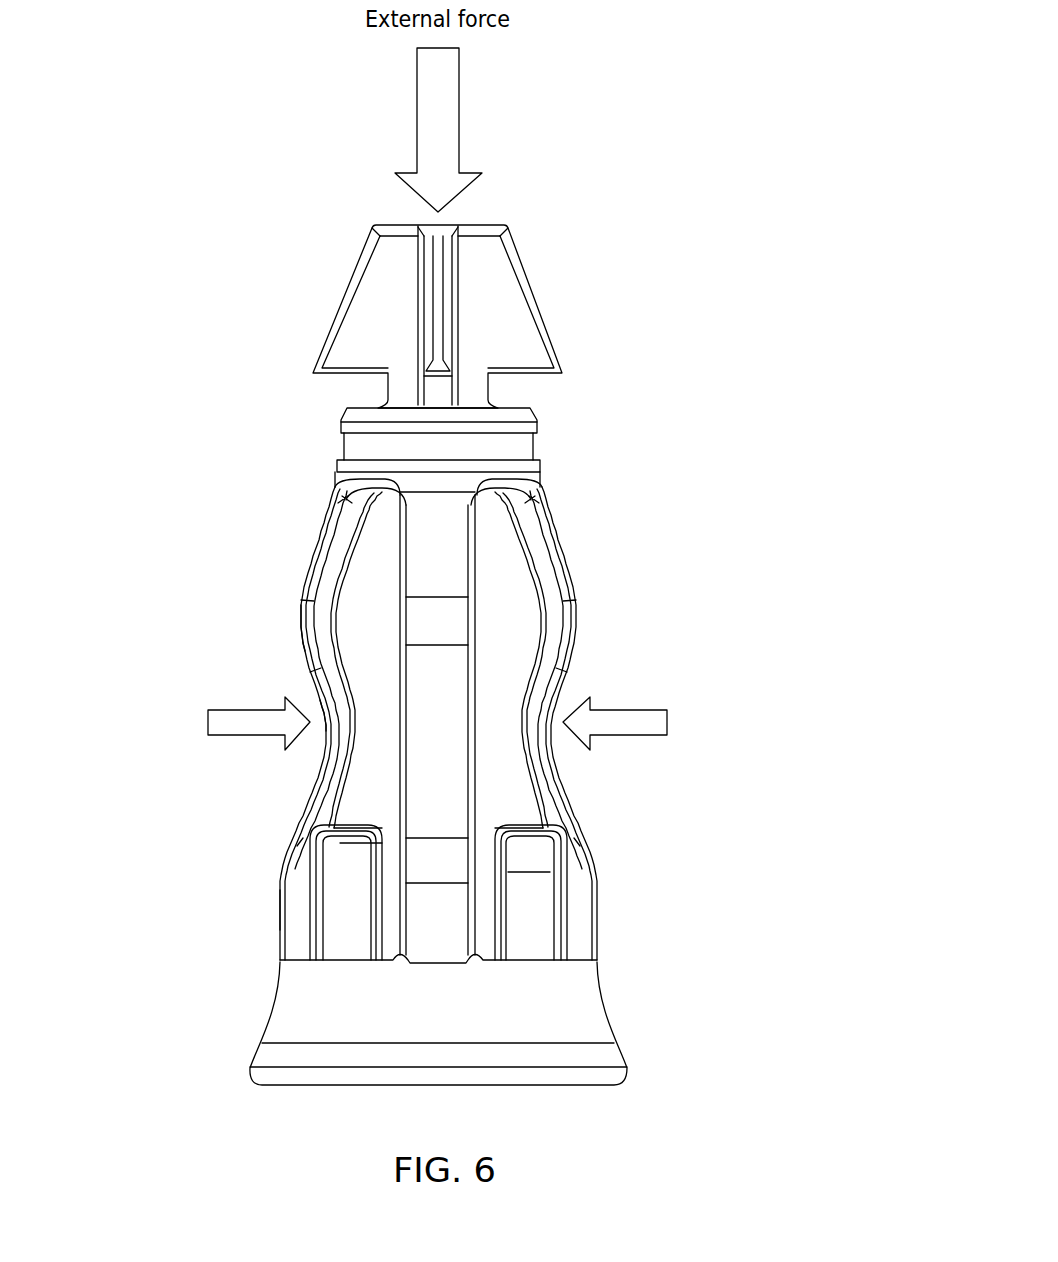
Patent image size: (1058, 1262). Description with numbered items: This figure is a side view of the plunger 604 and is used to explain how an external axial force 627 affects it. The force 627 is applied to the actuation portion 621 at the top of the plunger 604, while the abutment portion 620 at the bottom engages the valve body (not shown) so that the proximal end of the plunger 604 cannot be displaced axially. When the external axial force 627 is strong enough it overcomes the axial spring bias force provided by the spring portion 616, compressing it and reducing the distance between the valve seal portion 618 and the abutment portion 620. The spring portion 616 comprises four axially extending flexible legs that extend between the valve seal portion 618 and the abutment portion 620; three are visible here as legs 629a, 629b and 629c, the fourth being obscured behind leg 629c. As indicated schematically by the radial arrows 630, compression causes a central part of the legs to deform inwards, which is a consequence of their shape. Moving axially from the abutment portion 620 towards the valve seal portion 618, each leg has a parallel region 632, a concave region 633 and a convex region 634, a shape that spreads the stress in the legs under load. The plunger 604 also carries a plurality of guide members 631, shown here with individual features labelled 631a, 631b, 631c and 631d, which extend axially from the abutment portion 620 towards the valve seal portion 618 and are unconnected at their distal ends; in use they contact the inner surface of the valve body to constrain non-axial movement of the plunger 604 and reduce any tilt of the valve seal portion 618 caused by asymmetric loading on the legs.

The plunger 604 is at (648, 272).
The spring portion 616 is at (617, 582).
The valve seal portion 618 is at (560, 430).
The abutment portion 620 is at (634, 1021).
The actuation portion 621 is at (510, 262).
The external axial force 627 is at (463, 105).
The flexible leg 629a is at (545, 515).
The flexible leg 629b is at (345, 512).
The flexible leg 629c is at (435, 685).
The radial arrows 630 is at (232, 737).
The guide members 631 is at (461, 822).
The first pocket 631a is at (567, 908).
The second pocket 631b is at (338, 923).
The pocket top edge 631c is at (337, 828).
The pocket top edge 631d is at (532, 828).
The parallel region 632 is at (282, 900).
The concave region 633 is at (318, 672).
The convex region 634 is at (304, 600).